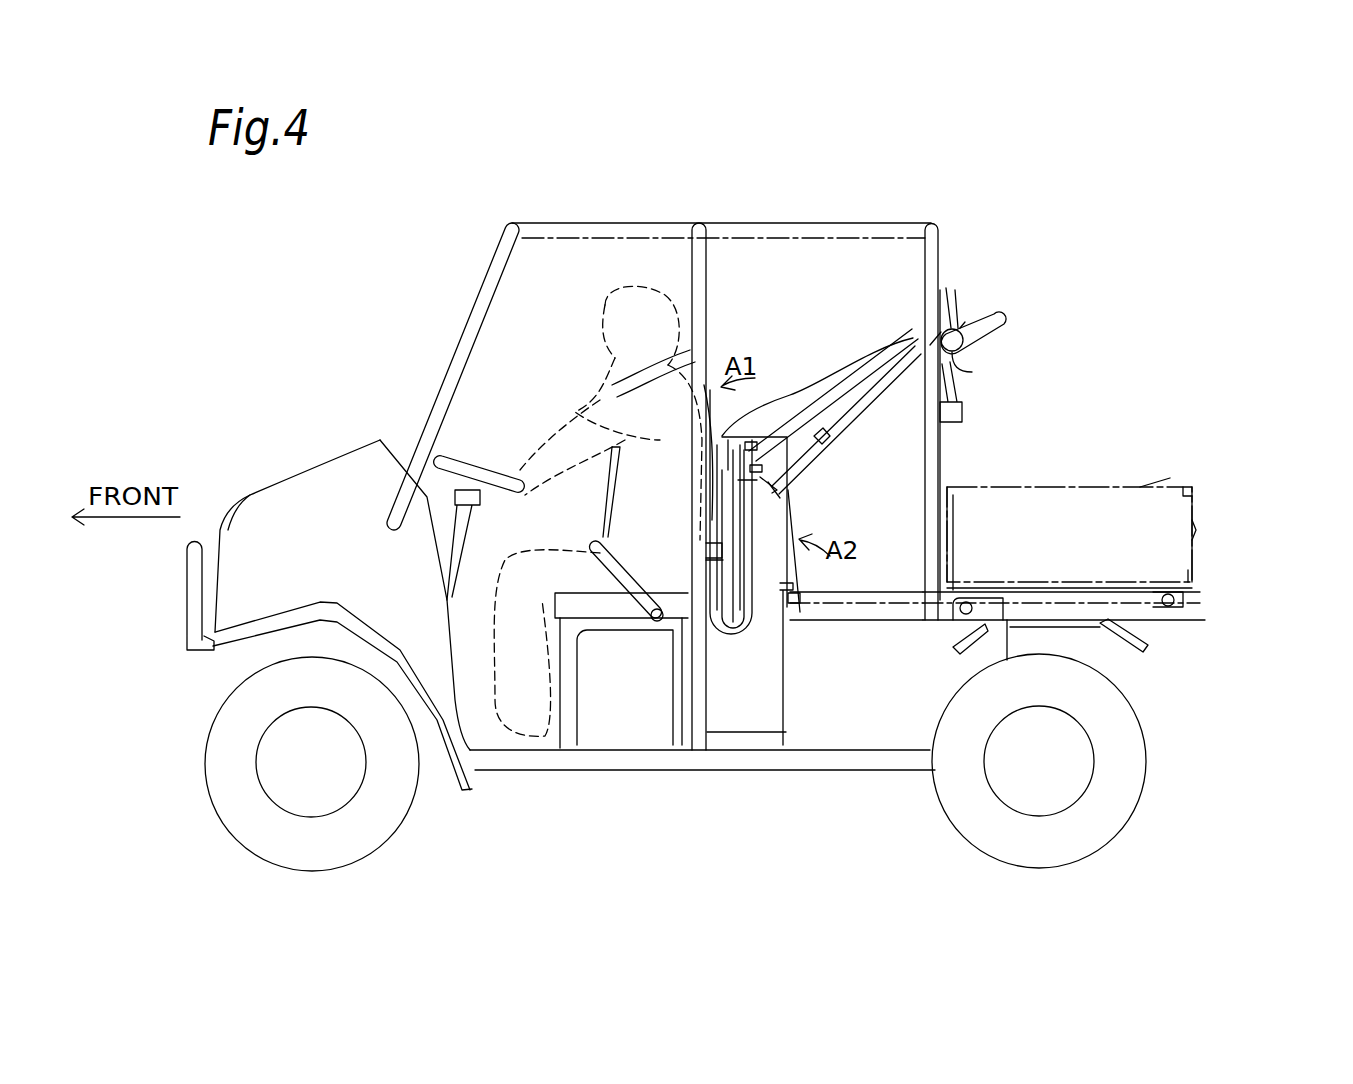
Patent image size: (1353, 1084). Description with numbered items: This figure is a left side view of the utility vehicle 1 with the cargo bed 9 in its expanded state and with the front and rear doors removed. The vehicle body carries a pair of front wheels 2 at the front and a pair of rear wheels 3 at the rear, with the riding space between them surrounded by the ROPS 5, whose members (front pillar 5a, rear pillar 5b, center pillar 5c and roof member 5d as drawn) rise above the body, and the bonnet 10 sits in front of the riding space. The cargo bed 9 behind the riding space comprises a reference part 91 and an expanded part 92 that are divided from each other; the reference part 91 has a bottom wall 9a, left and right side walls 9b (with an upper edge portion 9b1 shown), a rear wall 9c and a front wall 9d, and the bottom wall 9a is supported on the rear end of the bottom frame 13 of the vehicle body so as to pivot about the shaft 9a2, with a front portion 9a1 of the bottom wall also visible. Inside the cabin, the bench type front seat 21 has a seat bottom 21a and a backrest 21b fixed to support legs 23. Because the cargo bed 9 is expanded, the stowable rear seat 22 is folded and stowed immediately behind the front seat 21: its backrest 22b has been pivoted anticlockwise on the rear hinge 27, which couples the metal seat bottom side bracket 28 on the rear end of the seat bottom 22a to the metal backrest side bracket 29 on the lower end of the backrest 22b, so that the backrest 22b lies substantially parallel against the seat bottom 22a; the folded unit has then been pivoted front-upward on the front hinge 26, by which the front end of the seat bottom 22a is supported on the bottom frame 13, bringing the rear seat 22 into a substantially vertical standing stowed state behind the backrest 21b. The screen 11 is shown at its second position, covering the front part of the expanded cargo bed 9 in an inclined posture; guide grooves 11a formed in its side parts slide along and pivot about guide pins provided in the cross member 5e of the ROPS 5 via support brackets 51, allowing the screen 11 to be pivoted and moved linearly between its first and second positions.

The utility vehicle 1 is at (233, 430).
The front wheels 2 is at (306, 845).
The rear wheels 3 is at (1105, 815).
The ROPS 5 is at (695, 422).
The front pillar 5a is at (447, 392).
The rear pillar 5b is at (932, 262).
The center pillar 5c is at (706, 300).
The roof beam 5d is at (628, 232).
The cross member 5e is at (955, 312).
The cargo bed 9 is at (1112, 647).
The bottom wall 9a is at (1145, 612).
The bed bottom frame front portion 9a1 is at (1007, 650).
The shaft 9a2 is at (1180, 600).
The side walls 9b is at (1122, 498).
The bed side wall upper edge 9b1 is at (1143, 487).
The rear wall 9c is at (1195, 530).
The front wall 9d is at (1068, 605).
The bonnet 10 is at (316, 460).
The screen 11 is at (1003, 321).
The guide grooves 11a is at (981, 358).
The bottom frame 13 is at (842, 613).
The front seat 21 is at (595, 527).
The seat bottom 21a is at (607, 607).
The backrest 21b is at (673, 635).
The rear seat 22 is at (701, 613).
The seat bottom 22a is at (768, 450).
The backrest 22b is at (725, 640).
The support legs 23 is at (568, 740).
The front hinge 26 is at (793, 603).
The rear hinge 27 is at (775, 483).
The seat bottom side bracket 28 is at (880, 565).
The backrest side bracket 29 is at (757, 440).
The support brackets 51 is at (956, 345).
The reference part 91 is at (1060, 512).
The expanded part 92 is at (895, 540).